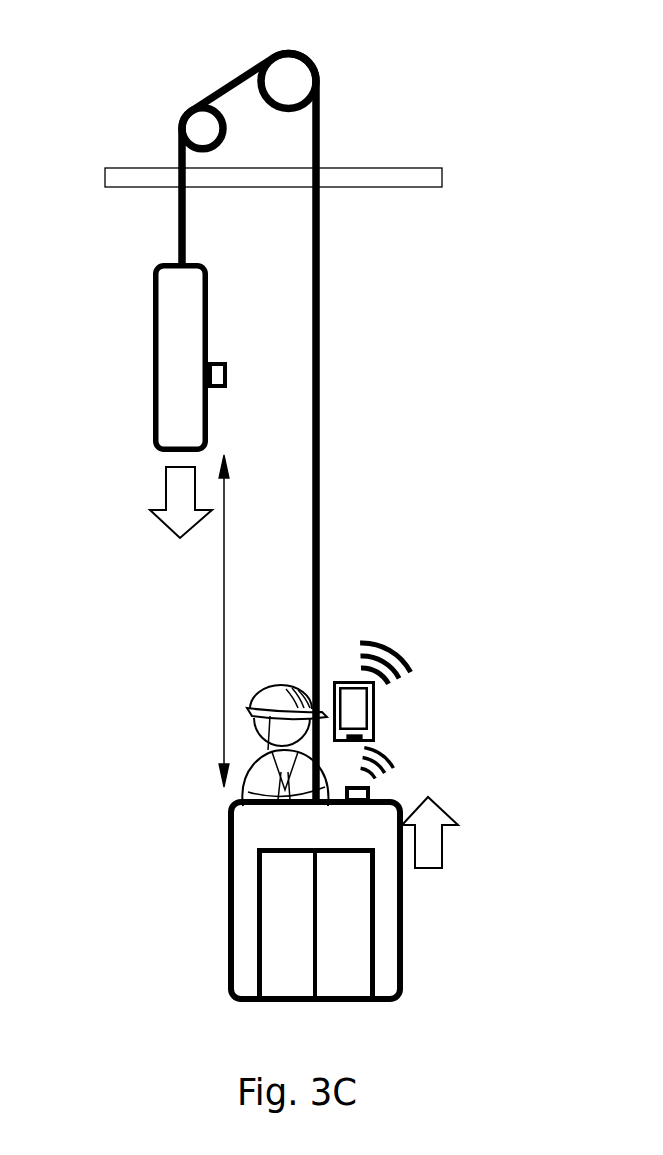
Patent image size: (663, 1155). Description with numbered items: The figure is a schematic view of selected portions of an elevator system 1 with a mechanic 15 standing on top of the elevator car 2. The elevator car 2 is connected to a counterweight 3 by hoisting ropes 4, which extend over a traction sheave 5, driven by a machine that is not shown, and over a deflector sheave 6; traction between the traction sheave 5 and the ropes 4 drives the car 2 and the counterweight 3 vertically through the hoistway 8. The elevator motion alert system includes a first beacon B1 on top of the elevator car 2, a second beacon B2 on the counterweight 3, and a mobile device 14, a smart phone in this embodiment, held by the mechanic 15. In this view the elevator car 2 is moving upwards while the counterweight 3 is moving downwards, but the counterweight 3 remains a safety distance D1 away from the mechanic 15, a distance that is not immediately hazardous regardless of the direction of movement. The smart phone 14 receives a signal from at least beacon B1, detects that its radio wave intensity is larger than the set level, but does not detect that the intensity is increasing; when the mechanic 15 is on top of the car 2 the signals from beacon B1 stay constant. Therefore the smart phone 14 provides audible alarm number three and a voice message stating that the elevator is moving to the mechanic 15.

The elevator system 1 is at (410, 108).
The elevator car 2 is at (405, 903).
The counterweight 3 is at (208, 293).
The hoisting ropes 4 is at (320, 240).
The traction sheave 5 is at (308, 57).
The deflector sheave 6 is at (178, 132).
The hoistway 8 is at (133, 540).
The mobile device 14 is at (375, 698).
The mechanic 15 is at (252, 728).
The first beacon B1 is at (370, 795).
The second beacon B2 is at (227, 375).
The safety distance D1 is at (206, 621).